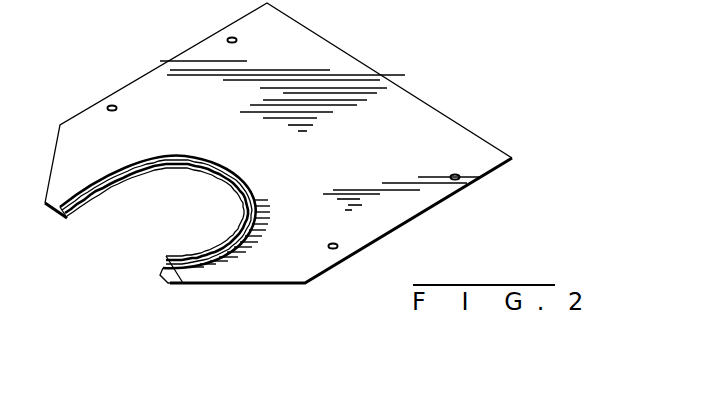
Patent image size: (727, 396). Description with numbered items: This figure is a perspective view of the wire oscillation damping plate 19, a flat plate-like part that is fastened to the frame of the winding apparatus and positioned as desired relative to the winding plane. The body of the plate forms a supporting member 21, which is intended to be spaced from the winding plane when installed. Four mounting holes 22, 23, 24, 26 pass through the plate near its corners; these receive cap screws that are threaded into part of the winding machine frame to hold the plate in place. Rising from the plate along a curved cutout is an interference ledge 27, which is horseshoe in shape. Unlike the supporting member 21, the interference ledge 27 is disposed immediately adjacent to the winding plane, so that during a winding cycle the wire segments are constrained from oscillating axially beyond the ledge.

The damping plate 19 is at (470, 190).
The supporting member 21 is at (455, 132).
The mounting hole 22 is at (110, 104).
The mounting hole 23 is at (232, 37).
The mounting hole 24 is at (456, 173).
The mounting hole 26 is at (334, 249).
The interference ledge 27 is at (215, 160).